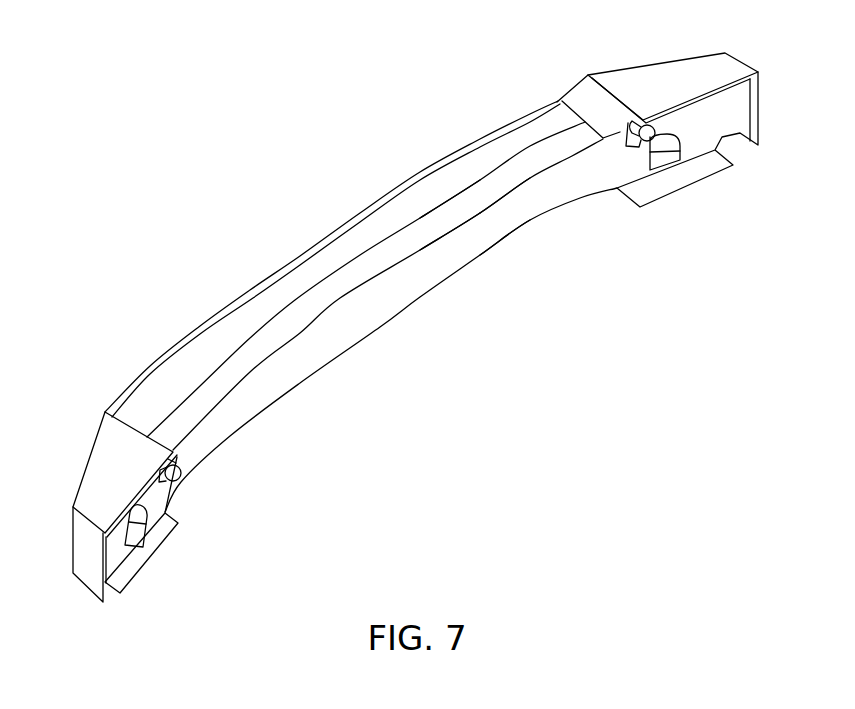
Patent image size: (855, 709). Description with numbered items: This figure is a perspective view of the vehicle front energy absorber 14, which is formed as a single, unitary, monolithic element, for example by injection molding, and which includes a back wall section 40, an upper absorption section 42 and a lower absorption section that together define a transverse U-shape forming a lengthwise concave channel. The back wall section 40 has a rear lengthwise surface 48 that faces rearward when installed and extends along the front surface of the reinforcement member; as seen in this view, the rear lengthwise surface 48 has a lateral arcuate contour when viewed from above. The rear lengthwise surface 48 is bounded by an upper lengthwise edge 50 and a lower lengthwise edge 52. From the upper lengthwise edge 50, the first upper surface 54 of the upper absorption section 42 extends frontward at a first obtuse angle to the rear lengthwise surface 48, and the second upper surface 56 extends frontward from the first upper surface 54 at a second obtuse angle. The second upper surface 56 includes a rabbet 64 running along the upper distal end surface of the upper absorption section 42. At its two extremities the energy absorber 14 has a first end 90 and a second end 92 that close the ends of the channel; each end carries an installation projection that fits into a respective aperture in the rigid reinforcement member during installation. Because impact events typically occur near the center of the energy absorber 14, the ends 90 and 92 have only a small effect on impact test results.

The energy absorber 14 is at (298, 198).
The back wall section 40 is at (332, 335).
The upper absorption section 42 is at (262, 310).
The rear lengthwise surface 48 is at (495, 223).
The upper lengthwise edge 50 is at (434, 240).
The lower lengthwise edge 52 is at (408, 308).
The first upper surface 54 is at (450, 205).
The second upper surface 56 is at (503, 148).
The rabbet 64 is at (400, 190).
The first end 90 is at (672, 82).
The second end 92 is at (115, 470).